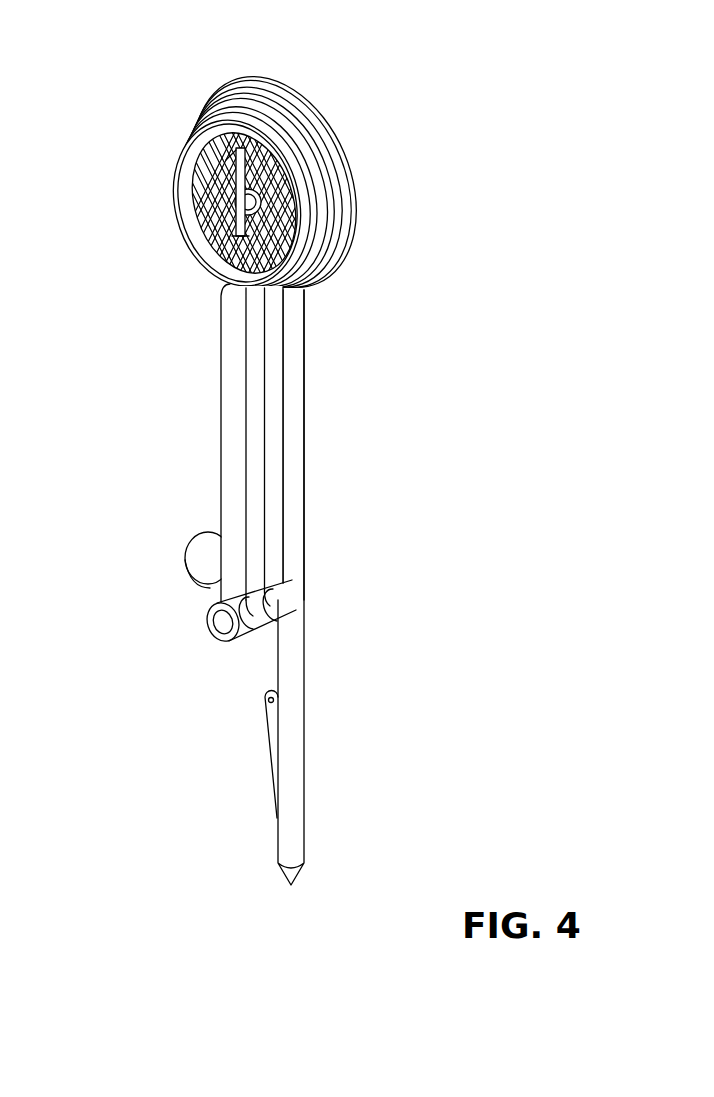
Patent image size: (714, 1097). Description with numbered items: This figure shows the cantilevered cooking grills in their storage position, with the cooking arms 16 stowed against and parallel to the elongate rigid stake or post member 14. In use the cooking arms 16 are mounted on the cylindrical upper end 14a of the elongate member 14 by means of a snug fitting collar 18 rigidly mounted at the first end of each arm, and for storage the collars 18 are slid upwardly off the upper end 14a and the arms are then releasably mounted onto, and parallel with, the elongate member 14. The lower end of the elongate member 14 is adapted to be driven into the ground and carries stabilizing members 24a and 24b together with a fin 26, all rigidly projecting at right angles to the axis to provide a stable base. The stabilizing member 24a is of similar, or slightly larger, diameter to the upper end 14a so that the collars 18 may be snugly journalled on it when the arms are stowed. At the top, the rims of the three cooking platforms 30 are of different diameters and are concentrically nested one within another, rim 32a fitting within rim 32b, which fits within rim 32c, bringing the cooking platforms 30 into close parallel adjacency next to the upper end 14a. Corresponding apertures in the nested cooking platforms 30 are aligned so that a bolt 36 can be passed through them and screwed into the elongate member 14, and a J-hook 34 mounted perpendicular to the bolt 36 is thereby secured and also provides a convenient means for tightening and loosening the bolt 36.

The elongate rigid stake or post member 14 is at (310, 700).
The upper end of elongate member 14a is at (305, 328).
The cantilevered cooking arms 16 is at (232, 310).
The collar 18 is at (287, 584).
The stabilizing member 24a is at (222, 623).
The stabilizing member 24b is at (195, 546).
The fin 26 is at (265, 727).
The cooking platforms 30 is at (200, 180).
The rim 32a is at (183, 230).
The rim 32b is at (288, 140).
The rim 32c is at (265, 95).
The J-hook 34 is at (222, 153).
The bolt 36 is at (252, 204).